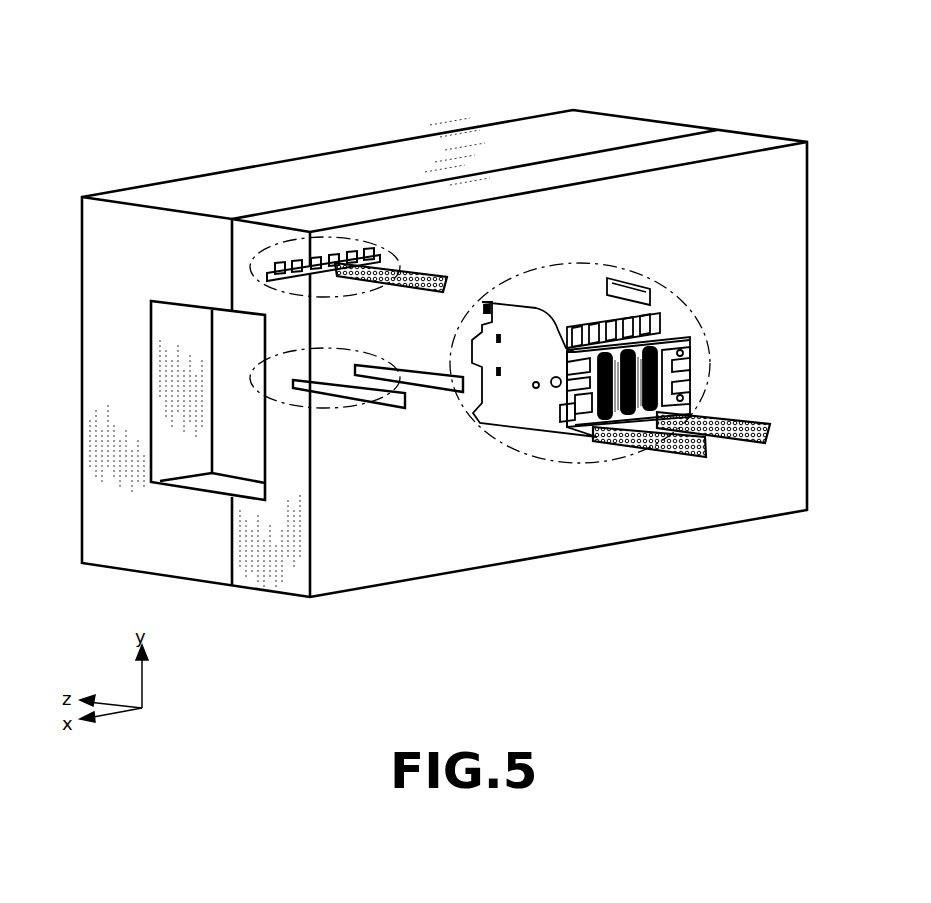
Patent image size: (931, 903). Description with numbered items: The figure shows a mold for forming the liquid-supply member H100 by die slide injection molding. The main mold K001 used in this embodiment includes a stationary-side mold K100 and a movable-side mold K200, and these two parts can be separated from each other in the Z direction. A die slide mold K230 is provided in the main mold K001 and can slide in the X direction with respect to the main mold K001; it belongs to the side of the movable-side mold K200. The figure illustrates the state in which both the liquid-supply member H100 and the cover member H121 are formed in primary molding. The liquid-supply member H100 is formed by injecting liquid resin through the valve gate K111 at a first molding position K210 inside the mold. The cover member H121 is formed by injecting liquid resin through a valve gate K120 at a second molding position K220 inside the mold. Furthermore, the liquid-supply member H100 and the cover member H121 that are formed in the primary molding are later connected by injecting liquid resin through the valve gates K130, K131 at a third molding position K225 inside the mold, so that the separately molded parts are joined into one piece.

The main mold K001 is at (714, 82).
The movable-side mold K200 is at (588, 117).
The stationary-side mold K100 is at (737, 140).
The cover member H121 is at (332, 254).
The second molding position K220 is at (250, 268).
The valve gate K120 is at (425, 266).
The liquid-supply member H100 is at (670, 326).
The third molding position K225 is at (343, 347).
The valve gate K131 is at (352, 397).
The valve gate K130 is at (433, 394).
The first molding position K210 is at (527, 463).
The valve gate K111 is at (667, 457).
The die slide mold K230 is at (240, 430).